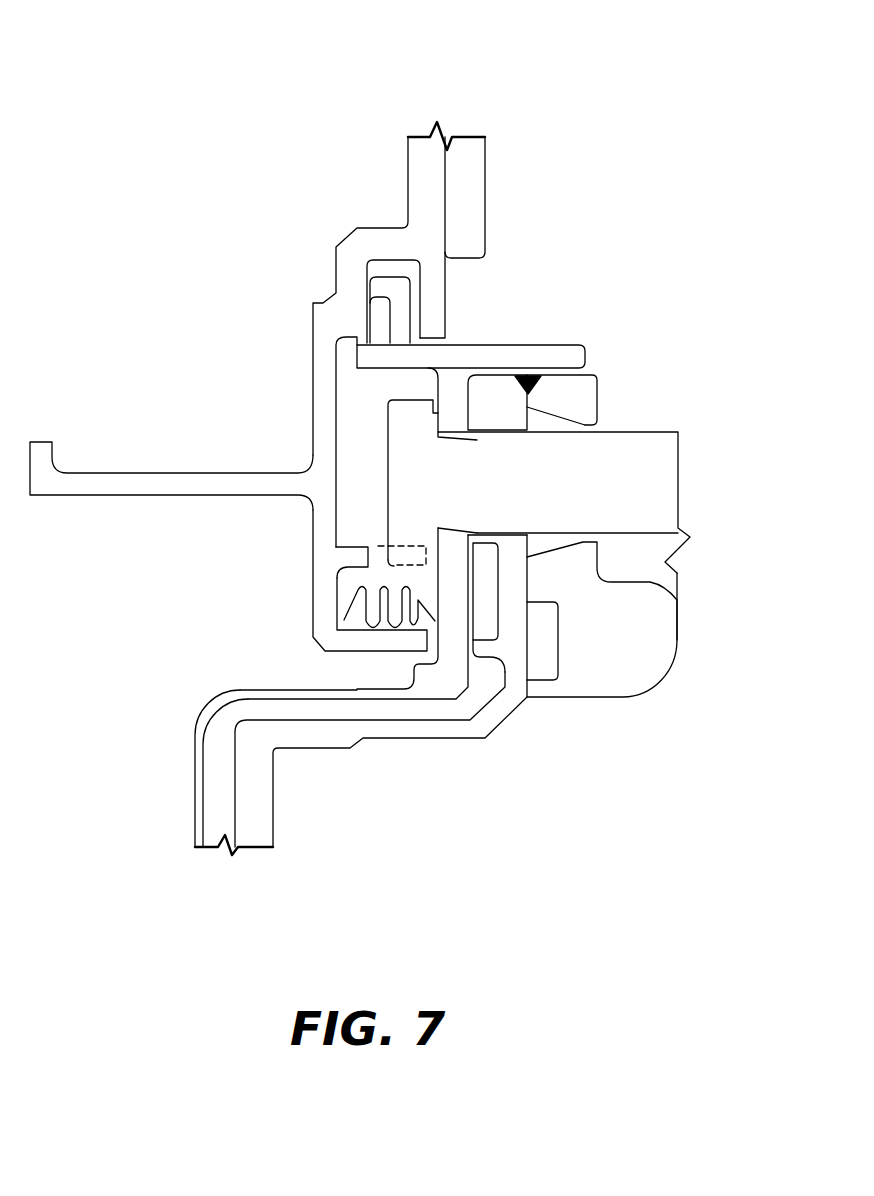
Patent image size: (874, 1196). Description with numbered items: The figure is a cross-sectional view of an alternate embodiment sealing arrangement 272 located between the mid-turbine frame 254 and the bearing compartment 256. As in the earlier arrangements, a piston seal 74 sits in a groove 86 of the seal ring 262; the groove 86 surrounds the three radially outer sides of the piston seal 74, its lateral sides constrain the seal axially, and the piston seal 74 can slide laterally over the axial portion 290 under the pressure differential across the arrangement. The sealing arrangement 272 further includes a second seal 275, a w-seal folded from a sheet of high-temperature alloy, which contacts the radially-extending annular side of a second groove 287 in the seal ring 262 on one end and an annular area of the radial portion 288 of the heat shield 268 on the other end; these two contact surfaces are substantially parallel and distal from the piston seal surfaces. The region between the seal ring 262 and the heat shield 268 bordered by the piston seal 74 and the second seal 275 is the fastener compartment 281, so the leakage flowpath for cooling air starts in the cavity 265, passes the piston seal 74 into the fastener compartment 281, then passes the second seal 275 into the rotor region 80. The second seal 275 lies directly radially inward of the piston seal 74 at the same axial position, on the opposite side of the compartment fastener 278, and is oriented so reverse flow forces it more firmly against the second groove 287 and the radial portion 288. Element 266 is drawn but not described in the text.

The sealing arrangement 272 is at (655, 92).
The mid-turbine frame 254 is at (489, 187).
The seal ring 262 is at (340, 240).
The groove 86 is at (392, 262).
The piston seal 74 is at (407, 309).
The axial portion 290 is at (565, 343).
The cavity 265 is at (680, 305).
The compartment fastener 278 is at (641, 433).
The fastener compartment 281 is at (382, 486).
The rotor region 80 is at (162, 593).
The second groove 287 is at (345, 570).
The second seal 275 is at (345, 607).
The radial portion 288 is at (435, 661).
The heat shield 268 is at (194, 766).
The bracket 266 is at (443, 738).
The bearing compartment 256 is at (594, 702).